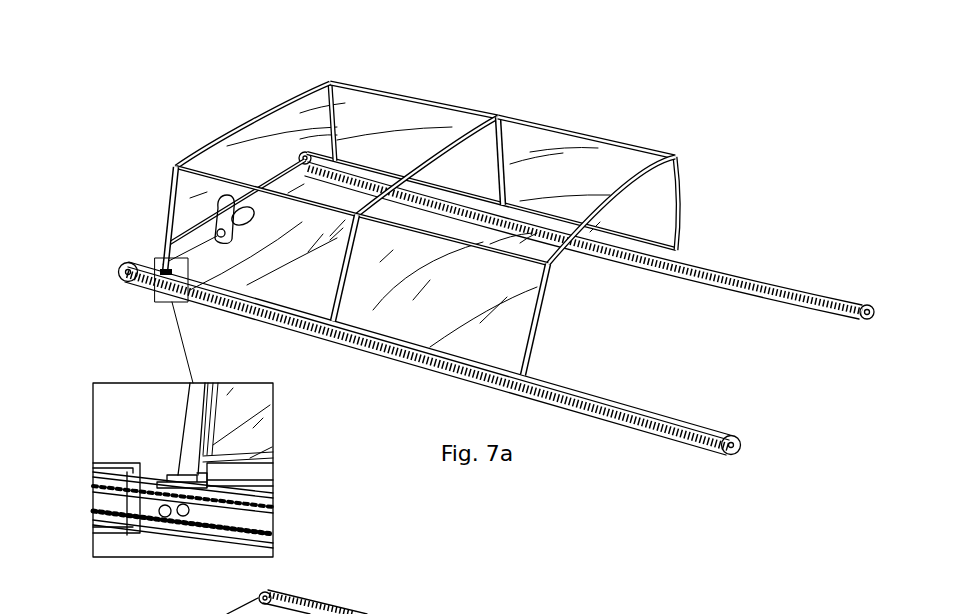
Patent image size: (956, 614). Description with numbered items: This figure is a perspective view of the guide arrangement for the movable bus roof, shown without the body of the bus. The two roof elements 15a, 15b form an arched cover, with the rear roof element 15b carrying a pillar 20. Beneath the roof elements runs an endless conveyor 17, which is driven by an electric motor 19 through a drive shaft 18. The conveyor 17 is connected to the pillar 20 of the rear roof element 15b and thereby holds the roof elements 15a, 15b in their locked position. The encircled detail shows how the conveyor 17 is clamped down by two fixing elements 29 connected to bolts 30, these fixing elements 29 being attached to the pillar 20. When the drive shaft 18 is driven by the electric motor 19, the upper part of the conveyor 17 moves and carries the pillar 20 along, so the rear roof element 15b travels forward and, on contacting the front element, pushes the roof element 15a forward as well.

The roof element 15a is at (557, 115).
The rear roof element 15b is at (380, 82).
The endless conveyor 17 is at (678, 417).
The drive shaft 18 is at (185, 232).
The electric motor 19 is at (238, 228).
The pillar 20 is at (193, 418).
The fixing element 29 is at (178, 472).
The bolt 30 is at (162, 517).